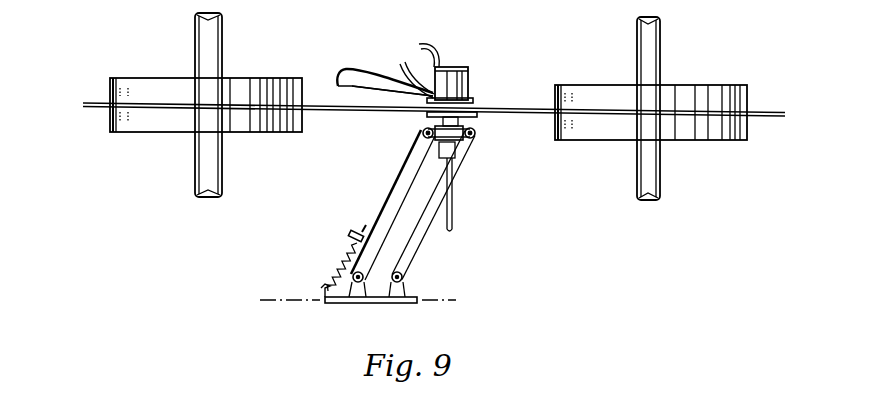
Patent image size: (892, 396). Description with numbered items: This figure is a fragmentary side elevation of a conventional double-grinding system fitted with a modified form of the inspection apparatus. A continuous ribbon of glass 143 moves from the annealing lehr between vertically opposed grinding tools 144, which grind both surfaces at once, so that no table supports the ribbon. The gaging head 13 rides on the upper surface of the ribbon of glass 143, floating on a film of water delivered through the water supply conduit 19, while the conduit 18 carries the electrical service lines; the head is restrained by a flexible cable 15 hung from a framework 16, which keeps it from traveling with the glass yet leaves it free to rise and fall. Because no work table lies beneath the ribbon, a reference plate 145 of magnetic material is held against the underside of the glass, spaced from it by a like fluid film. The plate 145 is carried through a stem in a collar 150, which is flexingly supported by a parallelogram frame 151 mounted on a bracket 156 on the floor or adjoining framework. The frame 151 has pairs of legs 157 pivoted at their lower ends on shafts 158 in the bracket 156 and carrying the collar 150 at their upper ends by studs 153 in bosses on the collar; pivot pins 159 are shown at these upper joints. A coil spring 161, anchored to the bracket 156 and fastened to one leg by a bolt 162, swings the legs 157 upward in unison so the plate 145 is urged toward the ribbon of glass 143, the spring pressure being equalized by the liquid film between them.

The gaging head 13 is at (469, 77).
The flexible cable 15 is at (370, 82).
The framework 16 is at (345, 70).
The conduit 18 is at (436, 44).
The water supply conduit 19 is at (402, 60).
The ribbon of glass 143 is at (349, 112).
The grinding tools 144 is at (238, 85).
The plate 145 is at (477, 117).
The collar 150 is at (458, 138).
The parallelogram frame 151 is at (401, 178).
The studs 153 is at (447, 150).
The bracket 156 is at (409, 289).
The legs 157 is at (392, 195).
The shafts 158 is at (356, 301).
The pivot pin 159 is at (423, 134).
The coil spring 161 is at (334, 271).
The bolt 162 is at (349, 236).